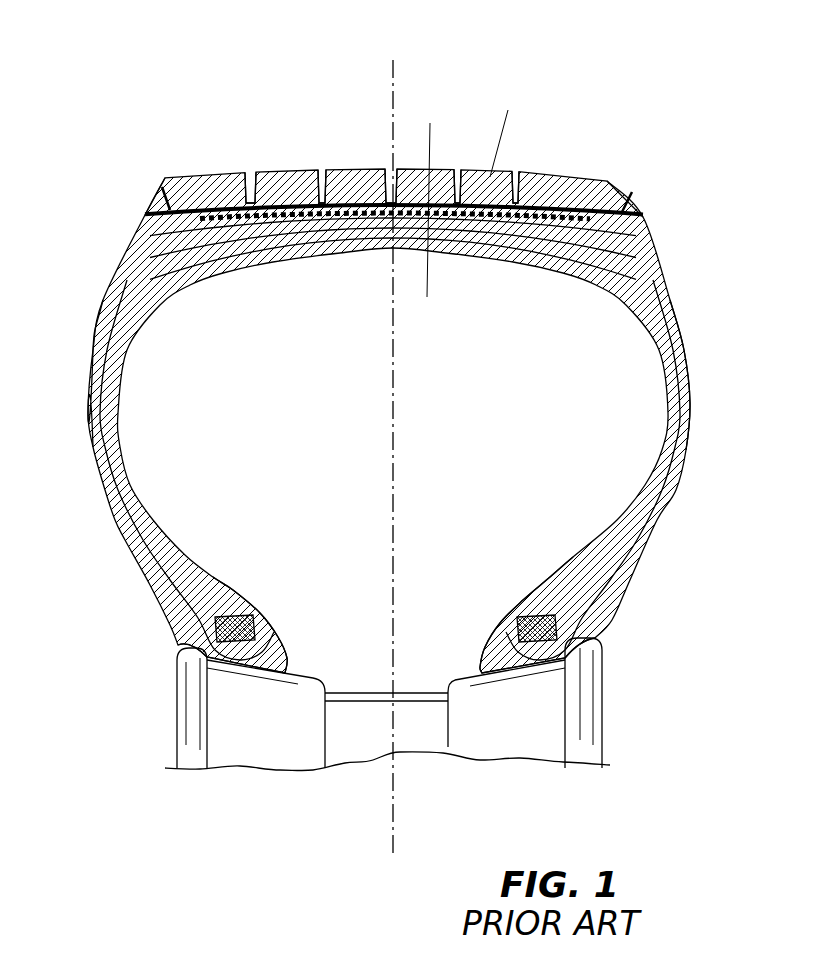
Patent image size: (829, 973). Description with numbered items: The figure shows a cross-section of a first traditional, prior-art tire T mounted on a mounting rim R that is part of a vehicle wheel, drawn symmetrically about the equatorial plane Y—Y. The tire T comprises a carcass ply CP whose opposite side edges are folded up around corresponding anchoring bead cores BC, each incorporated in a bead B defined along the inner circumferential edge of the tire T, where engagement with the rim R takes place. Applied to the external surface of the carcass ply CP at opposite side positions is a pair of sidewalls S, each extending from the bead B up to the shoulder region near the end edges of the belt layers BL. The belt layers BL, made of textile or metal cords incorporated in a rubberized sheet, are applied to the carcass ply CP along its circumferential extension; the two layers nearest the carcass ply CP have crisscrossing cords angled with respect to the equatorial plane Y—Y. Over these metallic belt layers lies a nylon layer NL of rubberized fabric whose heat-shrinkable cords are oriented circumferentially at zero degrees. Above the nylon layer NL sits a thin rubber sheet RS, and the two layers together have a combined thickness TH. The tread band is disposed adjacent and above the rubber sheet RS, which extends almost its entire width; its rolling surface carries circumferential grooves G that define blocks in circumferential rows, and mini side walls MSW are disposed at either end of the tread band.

The tire T is at (607, 92).
The equatorial plane Y is at (392, 75).
The combined thickness TH is at (457, 196).
The circumferential grooves G is at (249, 177).
The rubber sheet RS is at (583, 174).
The mini side walls MSW is at (158, 203).
The belt layers BL is at (178, 230).
The nylon layer NL is at (580, 228).
The sidewalls S is at (87, 413).
The carcass ply CP is at (118, 478).
The bead cores BC is at (240, 612).
The bead B is at (282, 635).
The mounting rim R is at (592, 727).